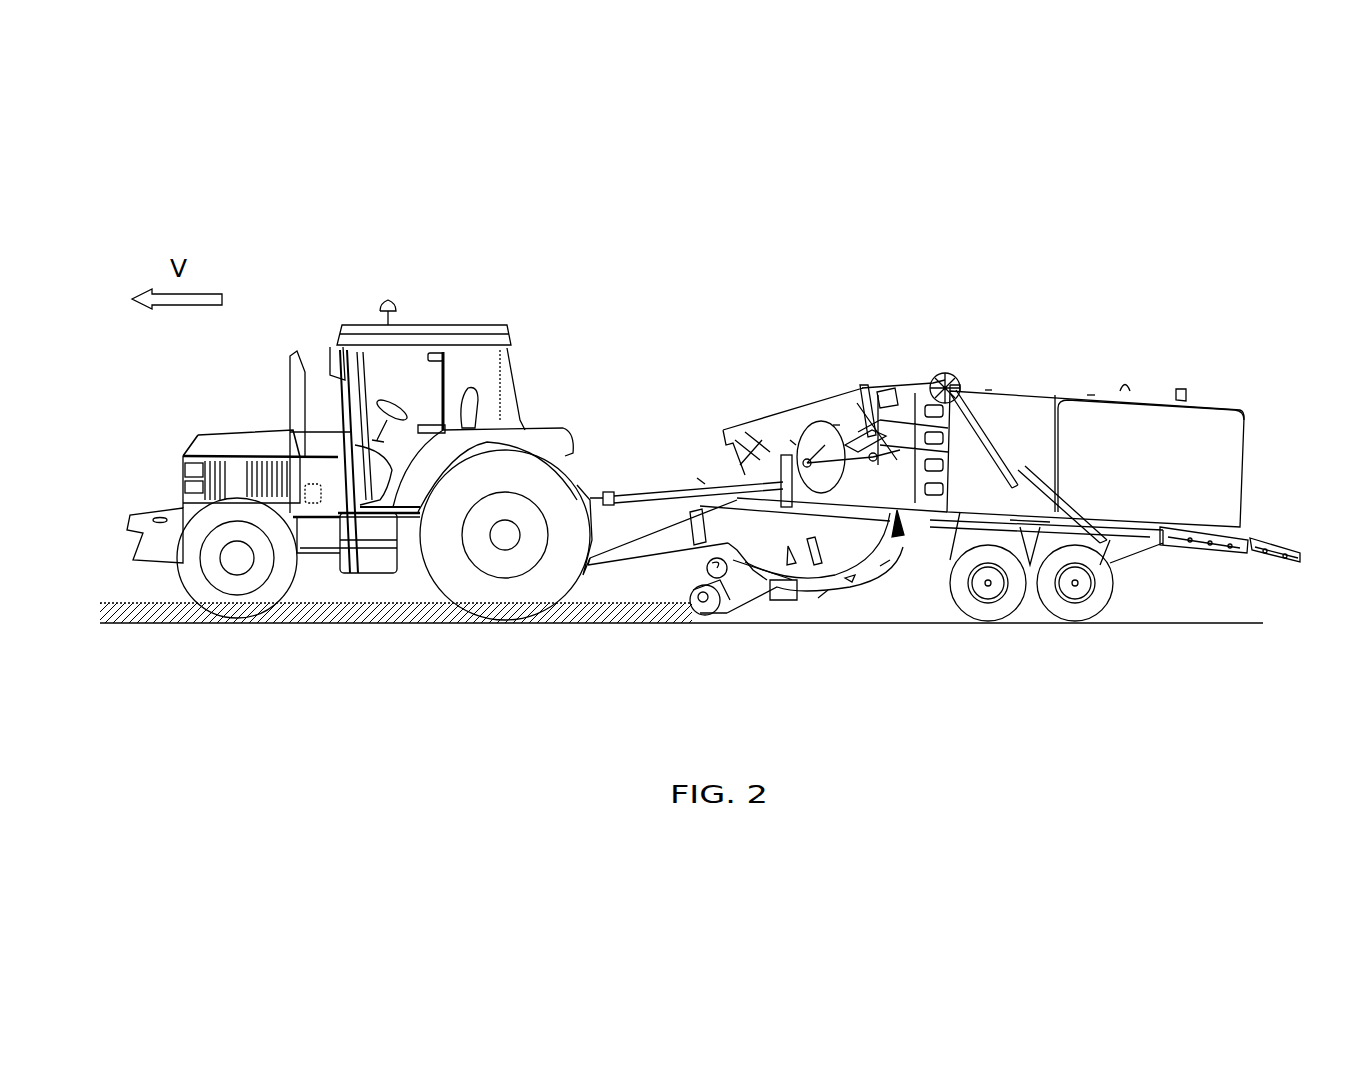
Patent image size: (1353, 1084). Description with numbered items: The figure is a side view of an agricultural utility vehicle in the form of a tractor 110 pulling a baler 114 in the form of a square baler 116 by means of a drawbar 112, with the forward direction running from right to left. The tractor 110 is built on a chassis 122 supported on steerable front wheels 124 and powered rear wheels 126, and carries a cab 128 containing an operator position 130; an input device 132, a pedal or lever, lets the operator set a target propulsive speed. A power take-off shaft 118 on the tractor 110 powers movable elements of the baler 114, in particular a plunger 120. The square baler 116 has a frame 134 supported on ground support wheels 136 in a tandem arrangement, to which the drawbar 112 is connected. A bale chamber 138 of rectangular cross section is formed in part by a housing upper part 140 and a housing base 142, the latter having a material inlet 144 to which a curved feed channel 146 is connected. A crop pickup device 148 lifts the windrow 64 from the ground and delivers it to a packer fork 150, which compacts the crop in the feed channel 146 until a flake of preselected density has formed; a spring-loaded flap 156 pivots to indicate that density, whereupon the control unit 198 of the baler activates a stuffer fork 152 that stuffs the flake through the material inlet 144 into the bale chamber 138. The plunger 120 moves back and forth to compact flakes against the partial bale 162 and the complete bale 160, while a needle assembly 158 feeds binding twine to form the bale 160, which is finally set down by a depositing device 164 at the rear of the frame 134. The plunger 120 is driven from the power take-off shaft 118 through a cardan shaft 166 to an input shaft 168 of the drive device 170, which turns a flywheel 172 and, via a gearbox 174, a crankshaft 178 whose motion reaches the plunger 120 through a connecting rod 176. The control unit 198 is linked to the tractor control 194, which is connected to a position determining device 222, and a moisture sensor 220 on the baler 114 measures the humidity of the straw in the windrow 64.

The windrow 64 is at (598, 625).
The tractor 110 is at (455, 439).
The drawbar 112 is at (663, 543).
The baler 114 is at (944, 455).
The square baler 116 is at (944, 492).
The power take-off shaft 118 is at (596, 493).
The plunger 120 is at (912, 449).
The chassis 122 is at (322, 555).
The steerable front wheels 124 is at (220, 605).
The powered rear wheels 126 is at (488, 602).
The cab 128 is at (430, 298).
The operator position 130 is at (473, 405).
The input device 132 is at (378, 575).
The frame 134 is at (1030, 518).
The ground support wheels 136 is at (1033, 605).
The bale chamber 138 is at (1095, 456).
The housing upper part 140 is at (1087, 395).
The housing base 142 is at (1123, 523).
The material inlet 144 is at (899, 537).
The curved feed channel 146 is at (887, 565).
The crop pickup device 148 is at (690, 602).
The packer fork 150 is at (788, 553).
The stuffer fork 152 is at (815, 542).
The spring-loaded flap 156 is at (855, 580).
The needle assembly 158 is at (1050, 517).
The bale 160 is at (1151, 456).
The partial bale 162 is at (992, 390).
The depositing device 164 is at (1222, 532).
The cardan shaft 166 is at (698, 480).
The input shaft 168 is at (748, 462).
The drive device 170 is at (783, 490).
The flywheel 172 is at (790, 440).
The gearbox 174 is at (833, 425).
The connecting rod 176 is at (860, 398).
The crankshaft 178 is at (820, 437).
The control 194 is at (297, 432).
The control unit 198 is at (934, 375).
The moisture sensor 220 is at (822, 593).
The position determining device 222 is at (388, 305).